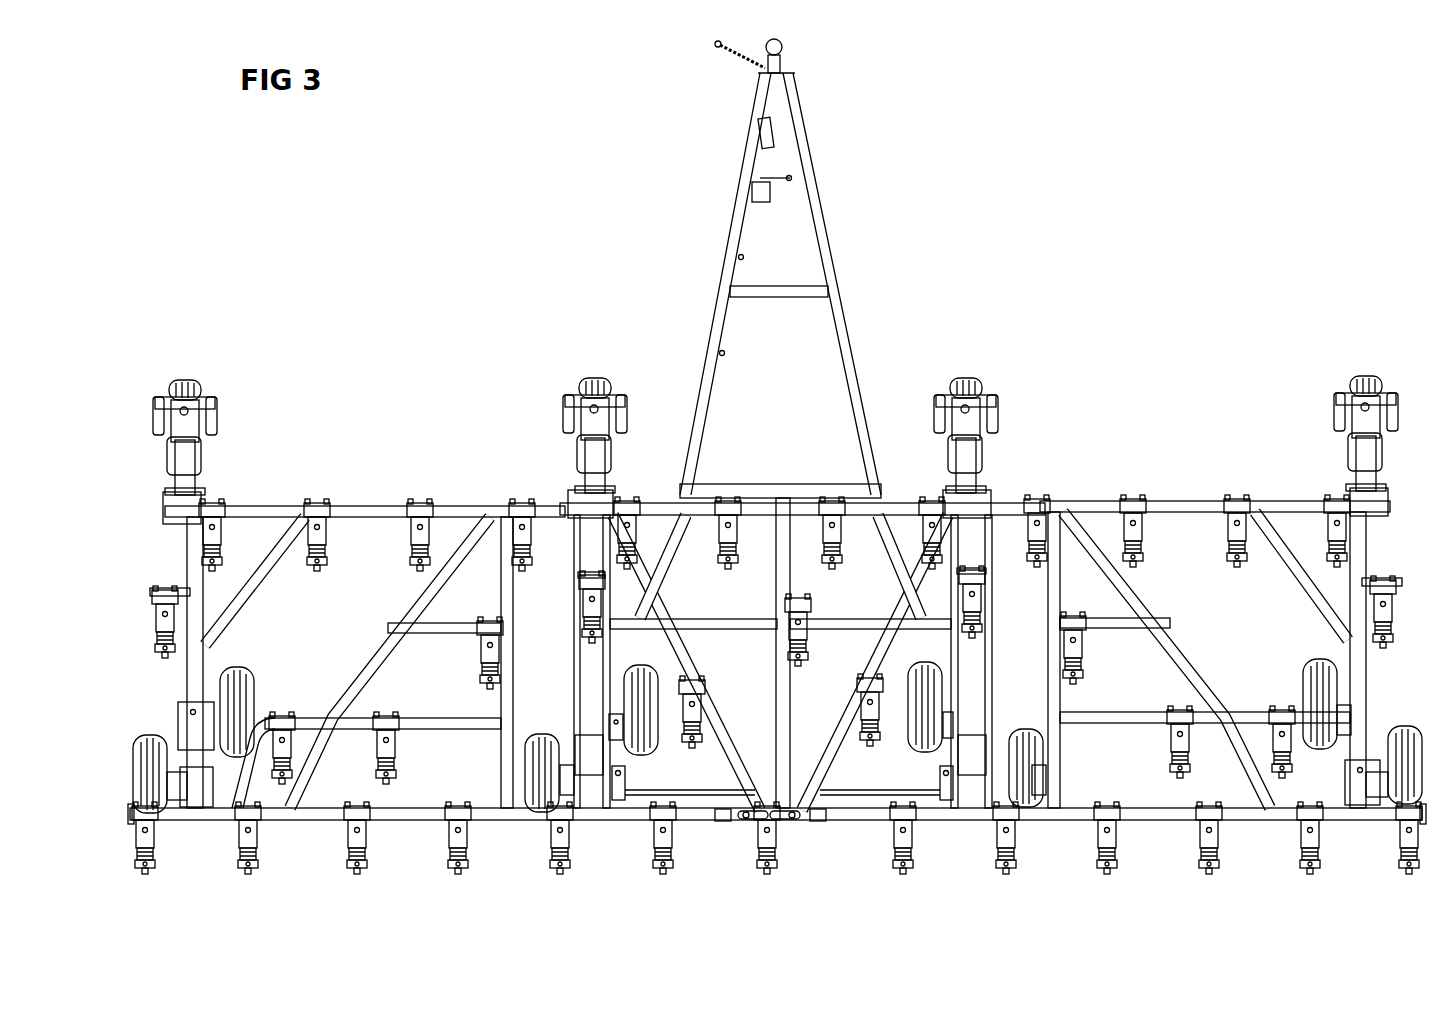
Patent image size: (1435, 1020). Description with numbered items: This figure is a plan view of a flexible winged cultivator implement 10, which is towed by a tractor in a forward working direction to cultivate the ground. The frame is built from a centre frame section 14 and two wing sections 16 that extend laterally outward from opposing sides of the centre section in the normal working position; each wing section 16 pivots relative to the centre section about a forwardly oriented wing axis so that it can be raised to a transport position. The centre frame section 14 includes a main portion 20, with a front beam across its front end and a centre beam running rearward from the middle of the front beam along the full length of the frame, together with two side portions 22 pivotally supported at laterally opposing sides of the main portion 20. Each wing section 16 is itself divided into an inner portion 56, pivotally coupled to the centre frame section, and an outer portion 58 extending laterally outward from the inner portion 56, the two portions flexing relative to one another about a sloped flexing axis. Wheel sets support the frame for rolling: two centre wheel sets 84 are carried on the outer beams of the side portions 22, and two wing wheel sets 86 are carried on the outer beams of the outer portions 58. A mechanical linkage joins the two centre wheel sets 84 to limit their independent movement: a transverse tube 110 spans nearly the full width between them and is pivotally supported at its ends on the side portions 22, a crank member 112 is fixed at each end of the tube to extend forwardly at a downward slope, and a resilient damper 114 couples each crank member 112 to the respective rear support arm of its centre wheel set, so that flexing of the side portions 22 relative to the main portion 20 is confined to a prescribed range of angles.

The flexible winged cultivator implement 10 is at (1117, 127).
The centre frame section 14 is at (889, 393).
The wing section 16 is at (525, 300).
The main portion 20 is at (791, 592).
The side portion 22 is at (686, 615).
The inner portion 56 is at (372, 657).
The outer portion 58 is at (237, 615).
The centre wheel set 84 is at (587, 365).
The wing wheel set 86 is at (183, 376).
The transverse tube 110 is at (830, 795).
The crank member 112 is at (630, 791).
The resilient damper 114 is at (626, 776).